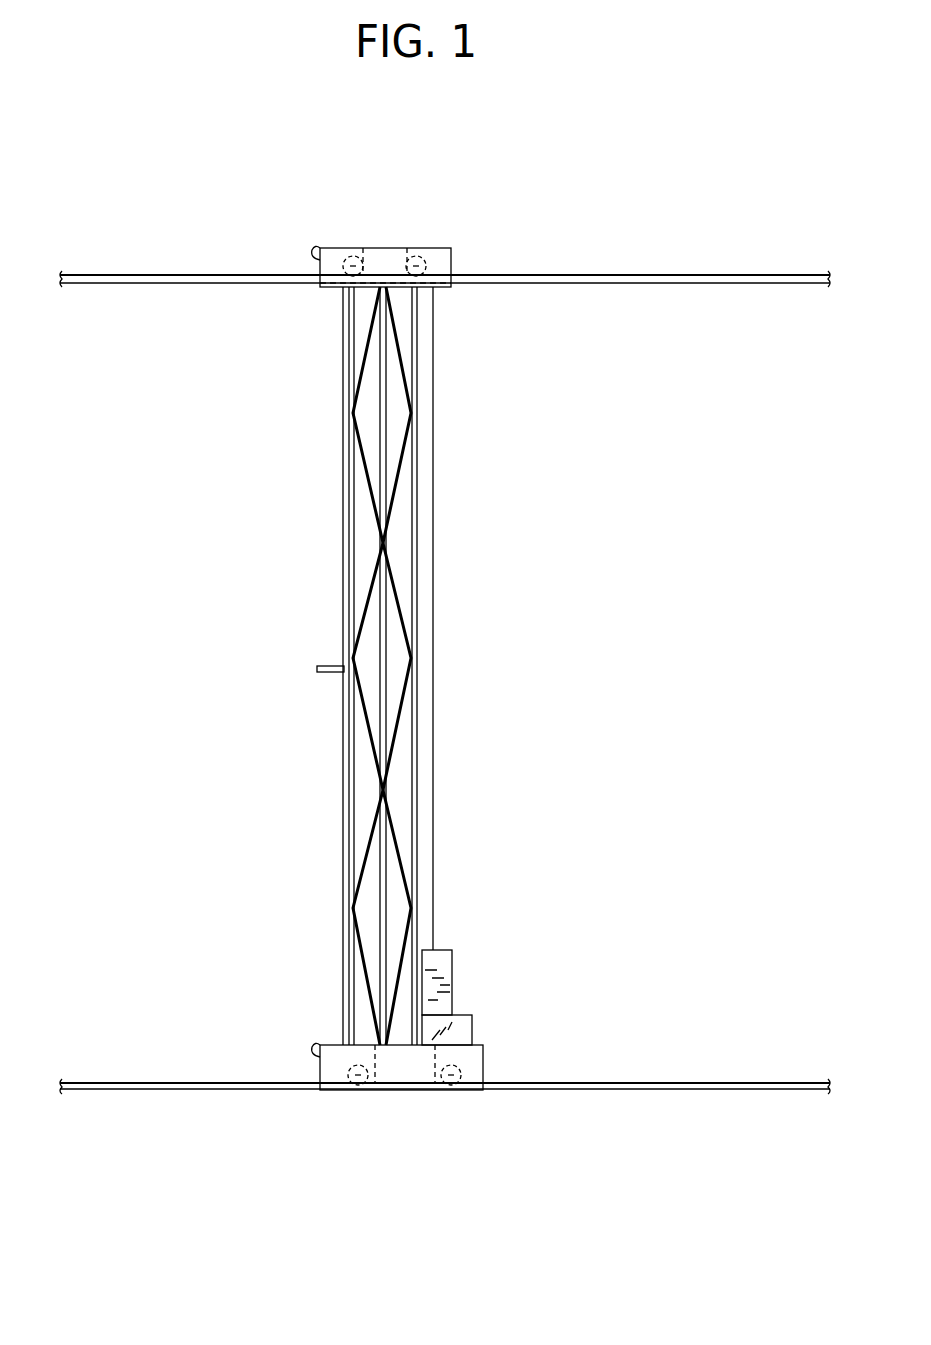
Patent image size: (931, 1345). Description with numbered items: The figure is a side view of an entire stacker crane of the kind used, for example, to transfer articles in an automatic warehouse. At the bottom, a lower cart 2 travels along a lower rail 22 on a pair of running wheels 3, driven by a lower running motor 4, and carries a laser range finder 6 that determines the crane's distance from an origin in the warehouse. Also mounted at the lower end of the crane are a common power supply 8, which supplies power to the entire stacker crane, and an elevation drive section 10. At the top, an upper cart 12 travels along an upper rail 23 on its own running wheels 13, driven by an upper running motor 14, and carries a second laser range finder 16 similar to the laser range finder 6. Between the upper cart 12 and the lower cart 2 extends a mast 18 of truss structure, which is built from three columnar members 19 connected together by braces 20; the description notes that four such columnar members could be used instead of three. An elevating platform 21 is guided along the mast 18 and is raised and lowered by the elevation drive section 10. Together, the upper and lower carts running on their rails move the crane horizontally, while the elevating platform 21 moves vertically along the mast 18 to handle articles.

The lower cart 2 is at (483, 1067).
The running wheels 3 is at (358, 1085).
The lower running motor 4 is at (403, 1070).
The laser range finder 6 is at (318, 1051).
The common power supply 8 is at (458, 1037).
The elevation drive section 10 is at (442, 969).
The upper cart 12 is at (452, 262).
The running wheels 13 is at (353, 256).
The upper running motor 14 is at (385, 258).
The laser range finder 16 is at (316, 252).
The mast 18 is at (442, 666).
The columnar members 19 is at (353, 365).
The braces 20 is at (400, 720).
The elevating platform 21 is at (328, 680).
The lower rail 22 is at (735, 1083).
The upper rail 23 is at (733, 283).